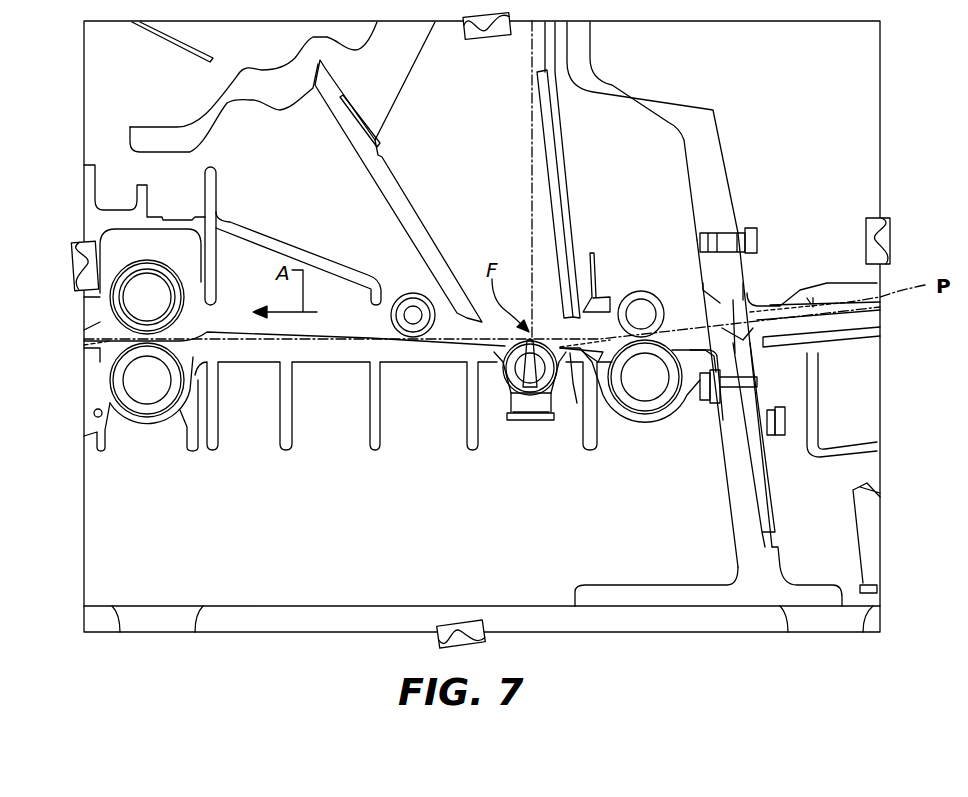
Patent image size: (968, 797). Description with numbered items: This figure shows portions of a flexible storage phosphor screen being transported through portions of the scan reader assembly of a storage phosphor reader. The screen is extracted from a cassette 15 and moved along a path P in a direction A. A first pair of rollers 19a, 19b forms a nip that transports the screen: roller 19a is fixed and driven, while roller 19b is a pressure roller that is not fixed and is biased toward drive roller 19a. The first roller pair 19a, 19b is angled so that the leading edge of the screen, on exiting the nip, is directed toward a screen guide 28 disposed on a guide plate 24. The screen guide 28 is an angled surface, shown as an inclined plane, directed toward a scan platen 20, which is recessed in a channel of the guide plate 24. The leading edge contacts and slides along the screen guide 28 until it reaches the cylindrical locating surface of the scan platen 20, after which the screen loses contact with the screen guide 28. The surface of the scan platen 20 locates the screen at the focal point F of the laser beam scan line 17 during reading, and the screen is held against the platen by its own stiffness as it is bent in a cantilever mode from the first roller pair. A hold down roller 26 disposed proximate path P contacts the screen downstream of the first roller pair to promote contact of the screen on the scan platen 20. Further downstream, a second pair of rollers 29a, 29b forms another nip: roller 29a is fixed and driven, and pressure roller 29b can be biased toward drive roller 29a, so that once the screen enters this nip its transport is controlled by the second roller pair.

The cassette 15 is at (832, 285).
The laser beam scan line 17 is at (530, 182).
The drive roller 19a is at (667, 407).
The pressure roller 19b is at (657, 290).
The scan platen 20 is at (507, 360).
The guide plate 24 is at (577, 403).
The hold down roller 26 is at (407, 293).
The screen guide 28 is at (578, 373).
The drive roller 29a is at (112, 392).
The pressure roller 29b is at (110, 325).